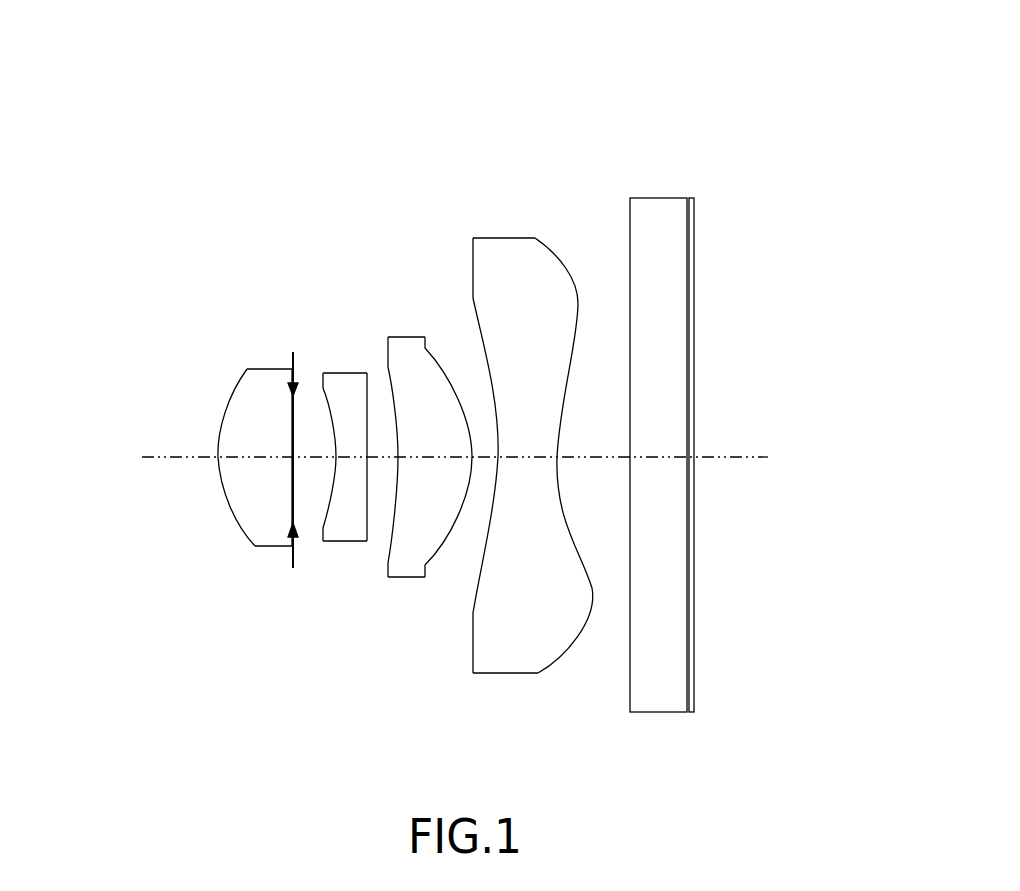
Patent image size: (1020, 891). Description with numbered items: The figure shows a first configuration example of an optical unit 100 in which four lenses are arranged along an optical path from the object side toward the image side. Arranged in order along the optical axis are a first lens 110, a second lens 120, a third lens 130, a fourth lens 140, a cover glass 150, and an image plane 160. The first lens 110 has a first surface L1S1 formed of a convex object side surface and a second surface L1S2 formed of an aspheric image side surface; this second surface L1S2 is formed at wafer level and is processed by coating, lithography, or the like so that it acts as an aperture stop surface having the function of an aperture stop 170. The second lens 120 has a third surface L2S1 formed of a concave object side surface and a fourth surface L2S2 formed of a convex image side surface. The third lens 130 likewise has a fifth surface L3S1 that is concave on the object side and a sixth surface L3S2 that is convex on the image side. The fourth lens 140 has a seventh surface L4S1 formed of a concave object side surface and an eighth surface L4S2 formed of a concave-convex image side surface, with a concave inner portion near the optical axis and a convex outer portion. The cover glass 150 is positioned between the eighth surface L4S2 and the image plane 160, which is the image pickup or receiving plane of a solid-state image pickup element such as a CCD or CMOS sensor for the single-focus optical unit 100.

The optical unit 100 is at (478, 65).
The first lens 110 is at (263, 375).
The second lens 120 is at (347, 383).
The third lens 130 is at (403, 343).
The fourth lens 140 is at (520, 247).
The cover glass 150 is at (652, 208).
The image plane 160 is at (689, 200).
The aperture stop 170 is at (292, 535).
The first surface L1S1 is at (227, 512).
The second surface L1S2 is at (293, 475).
The third surface L2S1 is at (330, 503).
The fourth surface L2S2 is at (367, 508).
The fifth surface L3S1 is at (395, 493).
The sixth surface L3S2 is at (446, 528).
The seventh surface L4S1 is at (493, 548).
The eighth surface L4S2 is at (582, 560).